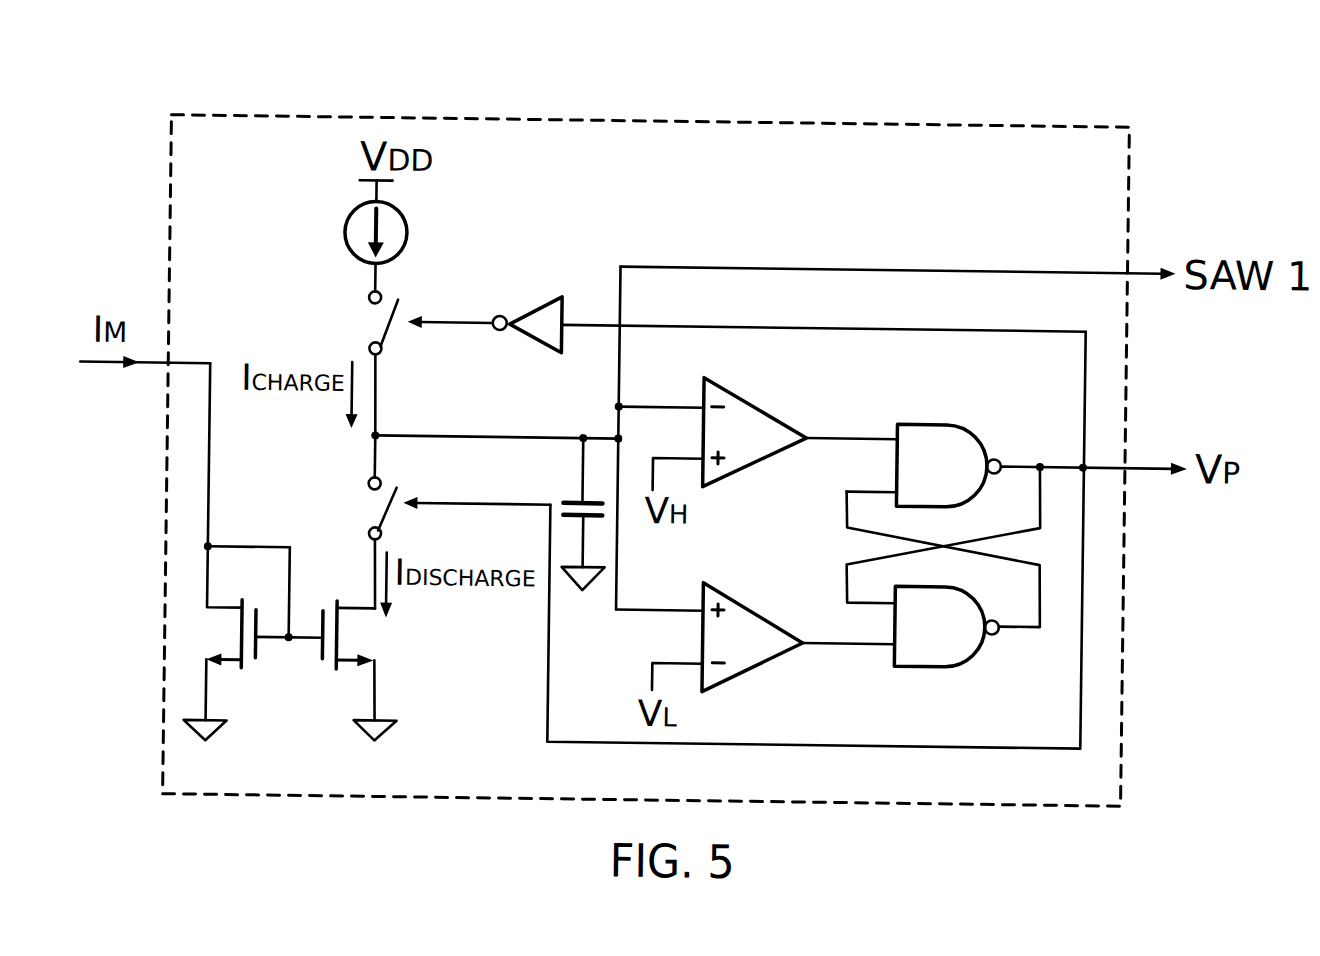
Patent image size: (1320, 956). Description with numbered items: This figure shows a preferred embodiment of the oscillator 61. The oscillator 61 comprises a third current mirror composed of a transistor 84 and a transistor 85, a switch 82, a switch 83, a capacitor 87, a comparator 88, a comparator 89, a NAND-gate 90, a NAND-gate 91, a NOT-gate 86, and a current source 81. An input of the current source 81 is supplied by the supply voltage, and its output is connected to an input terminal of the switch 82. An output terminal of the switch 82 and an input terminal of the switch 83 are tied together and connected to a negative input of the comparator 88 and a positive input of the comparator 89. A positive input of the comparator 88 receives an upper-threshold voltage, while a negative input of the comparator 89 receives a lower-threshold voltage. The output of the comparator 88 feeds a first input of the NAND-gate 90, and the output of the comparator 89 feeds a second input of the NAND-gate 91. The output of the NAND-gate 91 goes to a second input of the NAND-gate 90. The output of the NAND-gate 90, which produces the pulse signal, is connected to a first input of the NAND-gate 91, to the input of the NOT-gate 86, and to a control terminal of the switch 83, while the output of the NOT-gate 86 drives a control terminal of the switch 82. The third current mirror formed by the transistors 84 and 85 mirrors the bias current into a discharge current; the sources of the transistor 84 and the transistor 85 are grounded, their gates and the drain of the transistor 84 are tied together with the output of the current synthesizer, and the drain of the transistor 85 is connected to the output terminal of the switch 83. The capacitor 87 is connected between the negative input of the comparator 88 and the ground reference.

The sawtooth generator circuit 61 is at (1183, 90).
The current source 81 is at (414, 231).
The charge switch 82 is at (358, 329).
The discharge switch 83 is at (359, 516).
The current mirror transistor 84 is at (253, 670).
The current mirror output transistor 85 is at (382, 648).
The inverter 86 is at (562, 295).
The capacitor 87 is at (570, 493).
The upper threshold comparator 88 is at (741, 391).
The lower threshold comparator 89 is at (748, 681).
The NAND gate 90 is at (961, 414).
The NAND gate 91 is at (971, 666).